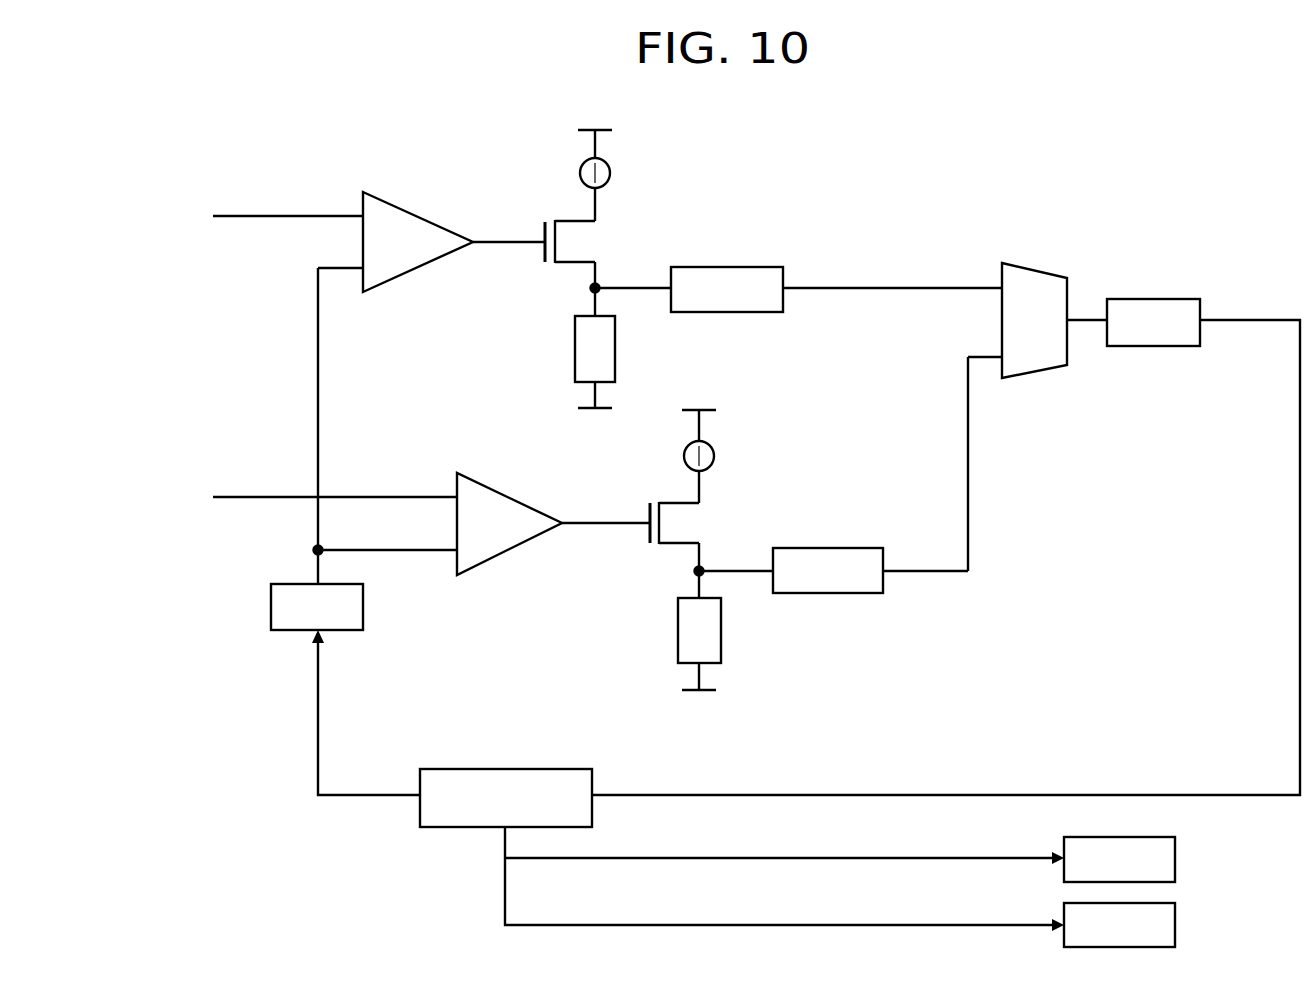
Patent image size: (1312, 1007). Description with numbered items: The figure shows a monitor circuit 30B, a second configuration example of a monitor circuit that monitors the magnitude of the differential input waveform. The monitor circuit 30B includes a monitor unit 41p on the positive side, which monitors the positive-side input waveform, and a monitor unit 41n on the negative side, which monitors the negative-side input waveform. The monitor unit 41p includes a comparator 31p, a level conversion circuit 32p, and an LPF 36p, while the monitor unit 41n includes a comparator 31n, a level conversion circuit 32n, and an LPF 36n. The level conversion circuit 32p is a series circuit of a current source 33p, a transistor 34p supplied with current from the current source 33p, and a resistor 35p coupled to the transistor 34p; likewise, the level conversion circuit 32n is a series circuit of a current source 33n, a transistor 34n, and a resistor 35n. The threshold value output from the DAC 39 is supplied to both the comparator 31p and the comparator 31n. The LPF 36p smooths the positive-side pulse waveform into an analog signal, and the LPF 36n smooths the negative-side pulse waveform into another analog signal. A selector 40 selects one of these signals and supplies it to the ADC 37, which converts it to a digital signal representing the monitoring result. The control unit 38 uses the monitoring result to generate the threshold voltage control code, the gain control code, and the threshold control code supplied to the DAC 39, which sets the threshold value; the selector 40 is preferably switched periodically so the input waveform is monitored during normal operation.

The monitor circuit 30B is at (131, 165).
The positive-side comparator 31p is at (427, 219).
The negative-side comparator 31n is at (511, 499).
The level conversion circuit 32p is at (630, 132).
The level conversion circuit 32n is at (736, 418).
The current source 33p is at (583, 170).
The current source 33n is at (686, 455).
The transistor 34p is at (543, 226).
The transistor 34n is at (648, 507).
The resistor 35p is at (575, 349).
The resistor 35n is at (678, 632).
The LPF 36p is at (730, 267).
The LPF 36n is at (832, 548).
The ADC 37 is at (1158, 300).
The control unit 38 is at (512, 770).
The DAC 39 is at (364, 608).
The selector 40 is at (1042, 269).
The positive-side monitor unit 41p is at (938, 217).
The negative-side monitor unit 41n is at (940, 630).